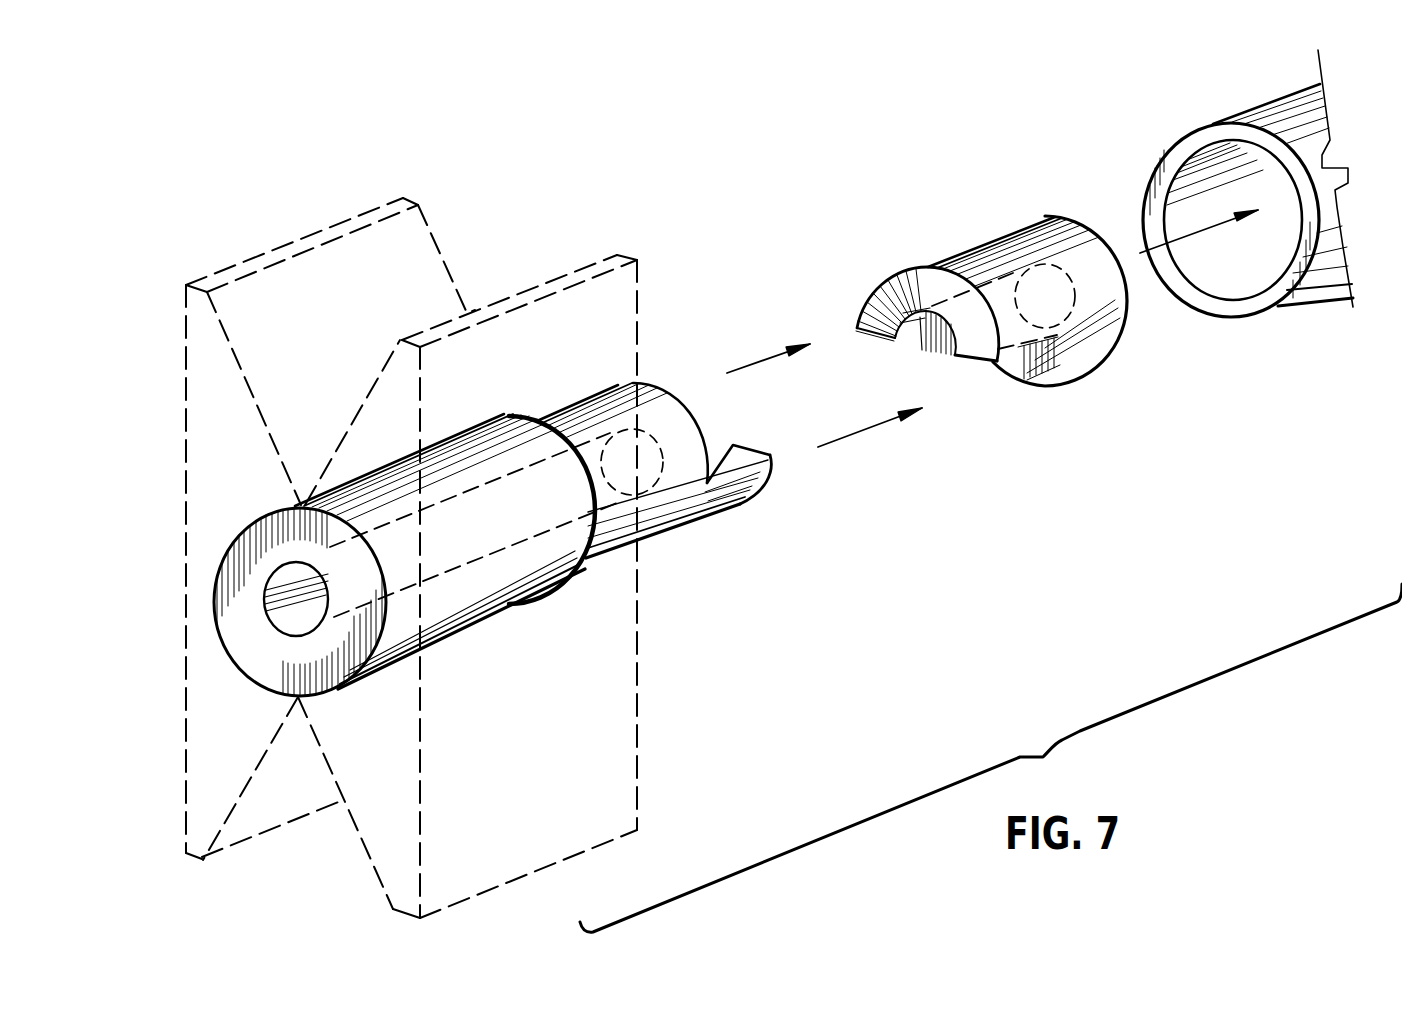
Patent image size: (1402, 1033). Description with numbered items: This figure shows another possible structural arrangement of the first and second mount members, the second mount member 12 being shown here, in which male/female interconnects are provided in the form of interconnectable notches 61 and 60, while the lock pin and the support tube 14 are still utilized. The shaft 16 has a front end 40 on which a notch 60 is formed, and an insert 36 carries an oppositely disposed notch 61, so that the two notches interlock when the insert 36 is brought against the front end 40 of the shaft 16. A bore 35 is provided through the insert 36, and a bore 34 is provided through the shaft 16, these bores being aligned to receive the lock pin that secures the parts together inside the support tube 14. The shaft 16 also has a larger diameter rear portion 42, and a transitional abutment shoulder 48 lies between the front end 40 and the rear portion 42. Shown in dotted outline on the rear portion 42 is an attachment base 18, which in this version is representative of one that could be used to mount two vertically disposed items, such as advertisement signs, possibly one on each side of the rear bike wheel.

The second mount member 12 is at (322, 211).
The support tube 14 is at (1226, 118).
The shaft 16 is at (650, 510).
The attachment base 18 is at (570, 278).
The bore 34 is at (650, 477).
The bore 35 is at (1058, 314).
The insert 36 is at (997, 232).
The front end of shaft 40 is at (665, 395).
The rear portion of shaft 42 is at (440, 645).
The transitional abutment shoulder 48 is at (592, 521).
The notch 60 is at (713, 437).
The notch 61 is at (977, 372).